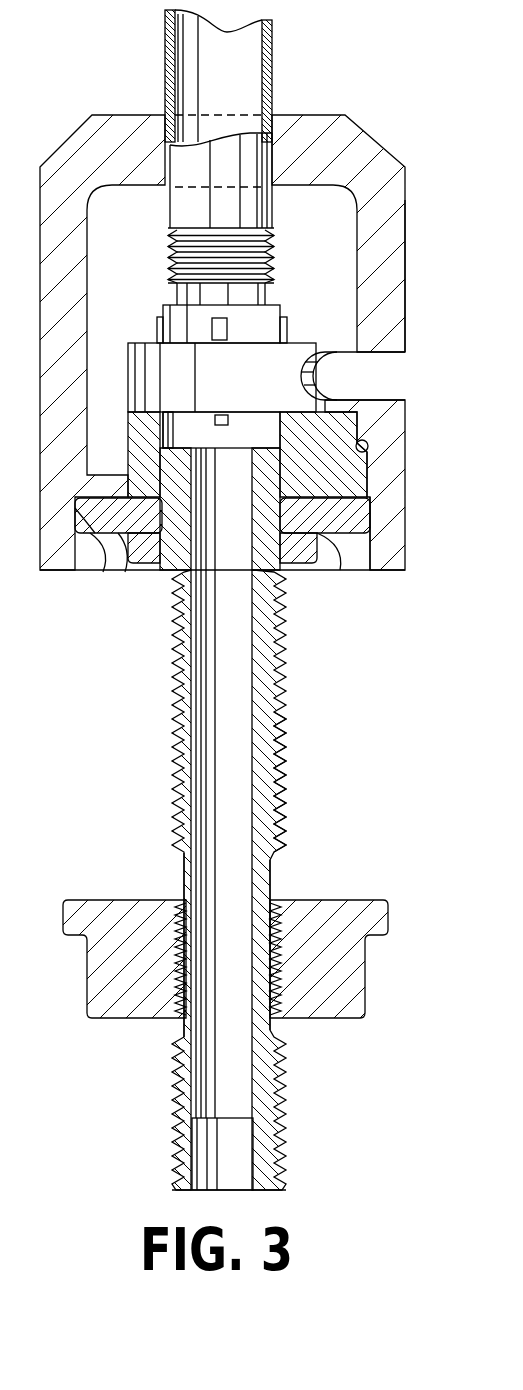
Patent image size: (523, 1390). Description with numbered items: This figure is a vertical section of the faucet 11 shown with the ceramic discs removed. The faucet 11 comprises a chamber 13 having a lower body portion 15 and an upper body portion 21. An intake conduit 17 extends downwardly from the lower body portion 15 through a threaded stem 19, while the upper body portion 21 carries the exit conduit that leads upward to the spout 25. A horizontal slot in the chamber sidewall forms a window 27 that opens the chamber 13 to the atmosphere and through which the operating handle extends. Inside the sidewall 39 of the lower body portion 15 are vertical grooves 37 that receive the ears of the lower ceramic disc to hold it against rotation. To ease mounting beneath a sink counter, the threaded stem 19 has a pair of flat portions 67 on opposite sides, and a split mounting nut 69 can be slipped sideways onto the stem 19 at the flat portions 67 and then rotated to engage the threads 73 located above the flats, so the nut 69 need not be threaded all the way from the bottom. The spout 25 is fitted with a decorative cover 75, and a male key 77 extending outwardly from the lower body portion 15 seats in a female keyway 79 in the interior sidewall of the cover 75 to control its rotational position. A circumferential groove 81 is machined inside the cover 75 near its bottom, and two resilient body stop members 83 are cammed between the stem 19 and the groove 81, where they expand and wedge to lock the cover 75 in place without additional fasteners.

The faucet 11 is at (128, 637).
The chamber 13 is at (236, 383).
The lower body portion 15 is at (337, 413).
The intake conduit 17 is at (233, 683).
The threaded stem 19 is at (278, 740).
The upper body portion 21 is at (330, 257).
The spout 25 is at (235, 80).
The window 27 is at (377, 382).
The vertical grooves 37 is at (172, 418).
The sidewall 39 is at (219, 783).
The flat portions 67 is at (182, 885).
The mounting nut 69 is at (353, 977).
The threads 73 is at (262, 810).
The decorative cover 75 is at (380, 307).
The male key 77 is at (350, 478).
The female keyway 79 is at (365, 447).
The circumferential groove 81 is at (103, 573).
The body stop members 83 is at (128, 545).